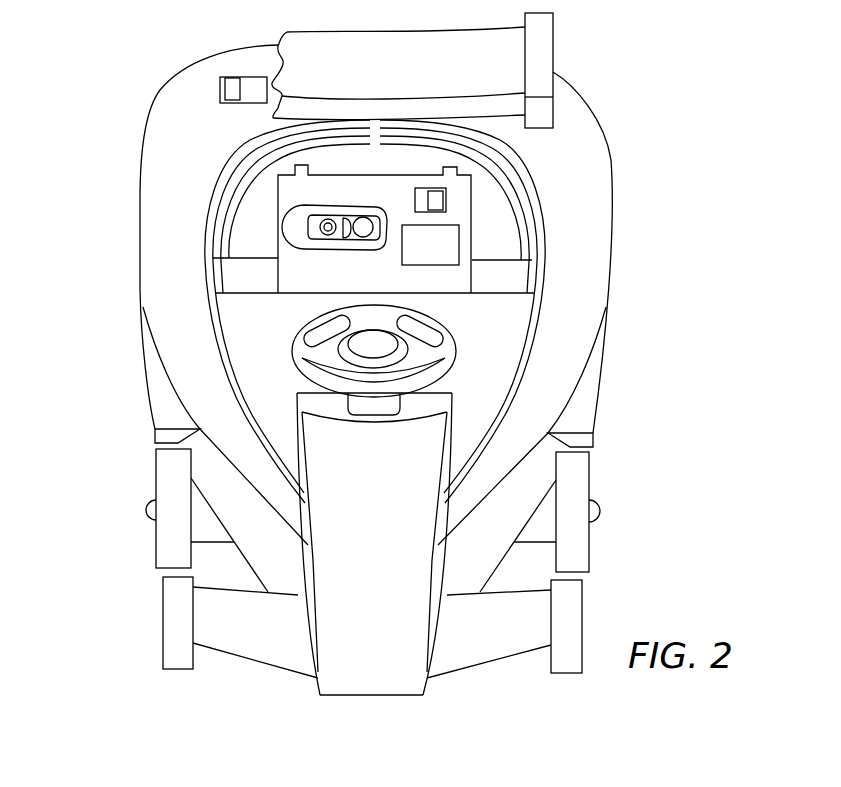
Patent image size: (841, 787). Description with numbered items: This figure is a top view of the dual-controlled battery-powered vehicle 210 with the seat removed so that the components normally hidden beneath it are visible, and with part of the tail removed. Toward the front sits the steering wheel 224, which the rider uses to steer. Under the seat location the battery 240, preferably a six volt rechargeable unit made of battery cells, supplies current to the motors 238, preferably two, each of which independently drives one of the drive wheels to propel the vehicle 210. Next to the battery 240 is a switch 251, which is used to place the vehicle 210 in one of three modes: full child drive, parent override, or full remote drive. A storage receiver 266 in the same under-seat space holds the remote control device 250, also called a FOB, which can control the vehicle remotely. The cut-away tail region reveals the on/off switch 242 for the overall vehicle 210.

The vehicle 210 is at (592, 395).
The steering wheel 224 is at (292, 352).
The motors 238 is at (235, 178).
The battery 240 is at (440, 243).
The on/off switch 242 is at (232, 90).
The remote control device 250 is at (298, 238).
The switch 251 is at (437, 200).
The storage receiver 266 is at (282, 228).